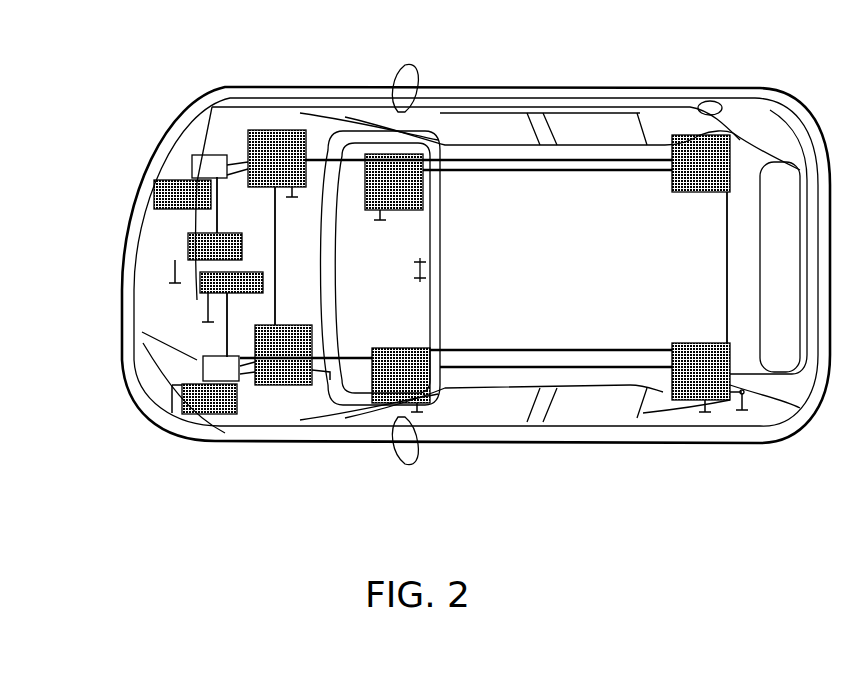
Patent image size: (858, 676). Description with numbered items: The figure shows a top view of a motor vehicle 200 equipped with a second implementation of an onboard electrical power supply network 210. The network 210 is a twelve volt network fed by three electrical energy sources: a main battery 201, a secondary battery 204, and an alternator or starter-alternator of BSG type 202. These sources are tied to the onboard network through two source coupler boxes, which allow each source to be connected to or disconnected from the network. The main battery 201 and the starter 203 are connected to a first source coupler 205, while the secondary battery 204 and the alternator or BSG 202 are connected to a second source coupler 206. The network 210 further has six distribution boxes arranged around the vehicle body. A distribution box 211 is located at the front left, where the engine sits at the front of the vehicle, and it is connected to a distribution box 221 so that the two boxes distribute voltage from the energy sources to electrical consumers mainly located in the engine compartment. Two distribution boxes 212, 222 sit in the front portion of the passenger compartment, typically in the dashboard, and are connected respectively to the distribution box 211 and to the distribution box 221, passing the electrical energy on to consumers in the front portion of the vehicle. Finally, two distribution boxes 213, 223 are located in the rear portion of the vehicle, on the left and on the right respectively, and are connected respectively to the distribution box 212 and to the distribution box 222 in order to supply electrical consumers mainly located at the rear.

The motor vehicle 200 is at (786, 408).
The main battery 201 is at (222, 414).
The alternator or BSG 202 is at (188, 246).
The starter 203 is at (200, 284).
The secondary battery 204 is at (154, 190).
The first source coupler 205 is at (255, 340).
The second source coupler 206 is at (192, 167).
The onboard electrical power supply network 210 is at (542, 241).
The distribution box 211 is at (203, 368).
The distribution box 212 is at (385, 408).
The distribution box 213 is at (672, 374).
The distribution box 221 is at (248, 142).
The distribution box 222 is at (404, 158).
The distribution box 223 is at (725, 148).